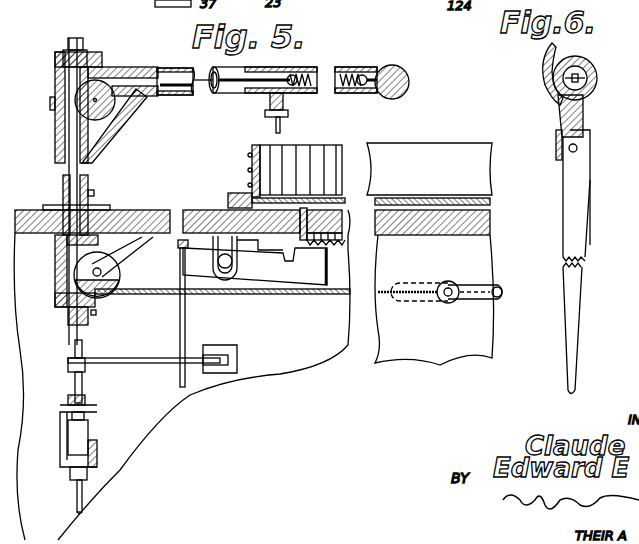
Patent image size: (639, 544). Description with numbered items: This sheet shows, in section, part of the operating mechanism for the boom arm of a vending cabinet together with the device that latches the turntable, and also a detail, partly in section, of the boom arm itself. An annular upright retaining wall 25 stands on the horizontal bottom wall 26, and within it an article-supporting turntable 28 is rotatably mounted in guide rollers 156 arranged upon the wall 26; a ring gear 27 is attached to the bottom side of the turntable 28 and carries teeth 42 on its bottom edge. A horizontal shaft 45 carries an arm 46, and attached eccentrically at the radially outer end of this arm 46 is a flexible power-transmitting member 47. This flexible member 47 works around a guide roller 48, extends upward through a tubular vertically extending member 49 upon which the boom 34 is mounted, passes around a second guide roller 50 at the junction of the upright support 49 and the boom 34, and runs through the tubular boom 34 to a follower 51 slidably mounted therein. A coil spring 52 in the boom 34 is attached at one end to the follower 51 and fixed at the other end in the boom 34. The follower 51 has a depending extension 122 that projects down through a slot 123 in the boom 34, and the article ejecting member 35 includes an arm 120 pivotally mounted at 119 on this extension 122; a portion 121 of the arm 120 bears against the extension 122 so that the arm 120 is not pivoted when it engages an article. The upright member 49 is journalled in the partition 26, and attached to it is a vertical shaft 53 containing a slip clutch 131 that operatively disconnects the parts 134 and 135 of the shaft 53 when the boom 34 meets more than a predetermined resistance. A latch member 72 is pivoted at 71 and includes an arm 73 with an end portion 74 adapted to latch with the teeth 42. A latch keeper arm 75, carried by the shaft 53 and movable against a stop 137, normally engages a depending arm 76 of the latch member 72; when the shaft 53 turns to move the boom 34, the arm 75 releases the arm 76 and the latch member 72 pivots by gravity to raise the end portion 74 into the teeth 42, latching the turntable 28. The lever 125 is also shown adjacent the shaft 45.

In FIG. 5, the annular upright retaining wall 25 is at (420, 152).
In FIG. 5, the horizontal bottom wall 26 is at (493, 228).
In FIG. 5, the ring gear 27 is at (341, 235).
In FIG. 5, the article-supporting turntable 28 is at (493, 203).
In FIG. 5, the boom 34 is at (182, 97).
In FIG. 6, the boom 34 is at (597, 94).
In FIG. 5, the article ejecting member 35 is at (287, 106).
In FIG. 6, the article ejecting member 35 is at (590, 216).
In FIG. 5, the teeth 42 is at (334, 245).
In FIG. 5, the horizontal shaft 45 is at (448, 301).
In FIG. 5, the arm 46 is at (485, 300).
In FIG. 5, the flexible power-transmitting member 47 is at (85, 158).
In FIG. 5, the guide roller 48 is at (105, 290).
In FIG. 5, the tubular vertically extending member 49 is at (60, 145).
In FIG. 5, the second guide roller 50 is at (105, 115).
In FIG. 5, the follower 51 is at (285, 68).
In FIG. 6, the follower 51 is at (578, 58).
In FIG. 5, the coil spring 52 is at (345, 67).
In FIG. 5, the vertical shaft 53 is at (84, 495).
In FIG. 5, the pivot 71 is at (226, 270).
In FIG. 5, the latch member 72 is at (305, 287).
In FIG. 5, the arm 73 is at (320, 273).
In FIG. 5, the end portion 74 is at (308, 249).
In FIG. 5, the latch keeper arm 75 is at (153, 364).
In FIG. 5, the arm 76 is at (185, 320).
In FIG. 6, the pivot 119 is at (578, 150).
In FIG. 6, the arm 120 is at (580, 248).
In FIG. 6, the portion 121 is at (591, 137).
In FIG. 5, the depending extension 122 is at (275, 101).
In FIG. 6, the depending extension 122 is at (559, 126).
In FIG. 5, the slot 123 is at (310, 94).
In FIG. 5, the lever 125 is at (502, 290).
In FIG. 5, the slip clutch 131 is at (95, 445).
In FIG. 5, the part of the operating shaft 134 is at (82, 385).
In FIG. 5, the part of the operating shaft 135 is at (77, 505).
In FIG. 5, the stop 137 is at (225, 368).
In FIG. 5, the guide rollers 156 is at (228, 200).